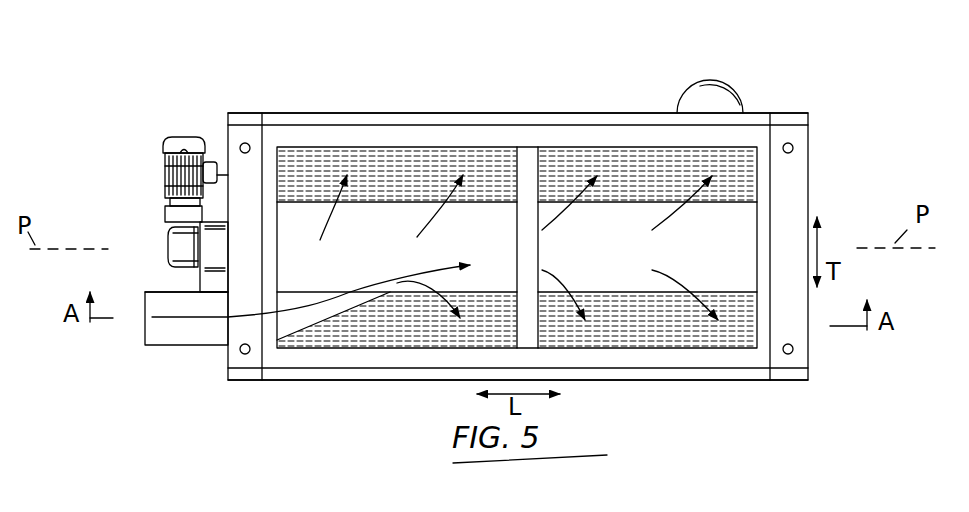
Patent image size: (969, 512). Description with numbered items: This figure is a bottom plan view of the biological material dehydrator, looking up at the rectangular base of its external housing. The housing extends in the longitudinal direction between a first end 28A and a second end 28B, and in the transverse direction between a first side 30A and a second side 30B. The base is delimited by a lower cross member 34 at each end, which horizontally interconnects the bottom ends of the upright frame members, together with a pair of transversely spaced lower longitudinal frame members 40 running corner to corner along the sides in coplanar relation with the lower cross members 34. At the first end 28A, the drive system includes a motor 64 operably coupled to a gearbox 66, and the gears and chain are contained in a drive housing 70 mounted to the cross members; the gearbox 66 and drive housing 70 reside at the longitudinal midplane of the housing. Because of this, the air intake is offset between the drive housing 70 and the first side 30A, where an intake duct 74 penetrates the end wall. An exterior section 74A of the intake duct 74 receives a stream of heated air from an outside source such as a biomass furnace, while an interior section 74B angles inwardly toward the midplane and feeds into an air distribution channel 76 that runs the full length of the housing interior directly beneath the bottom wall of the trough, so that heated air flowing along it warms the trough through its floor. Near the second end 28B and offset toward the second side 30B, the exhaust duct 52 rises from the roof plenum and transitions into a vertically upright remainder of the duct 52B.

The first end 28A is at (145, 212).
The second end 28B is at (830, 250).
The first side 30A is at (672, 385).
The second side 30B is at (493, 106).
The lower cross member 34 is at (243, 133).
The lower longitudinal frame member 40 is at (308, 133).
The exhaust duct 52 is at (710, 95).
The vertically upright remainder of the duct 52B is at (725, 84).
The motor 64 is at (183, 137).
The gearbox 66 is at (168, 252).
The drive housing 70 is at (680, 80).
The intake duct 74 is at (172, 333).
The exterior section of the intake duct 74A is at (198, 333).
The interior section of the intake duct 74B is at (325, 310).
The air distribution channel 76 is at (625, 257).